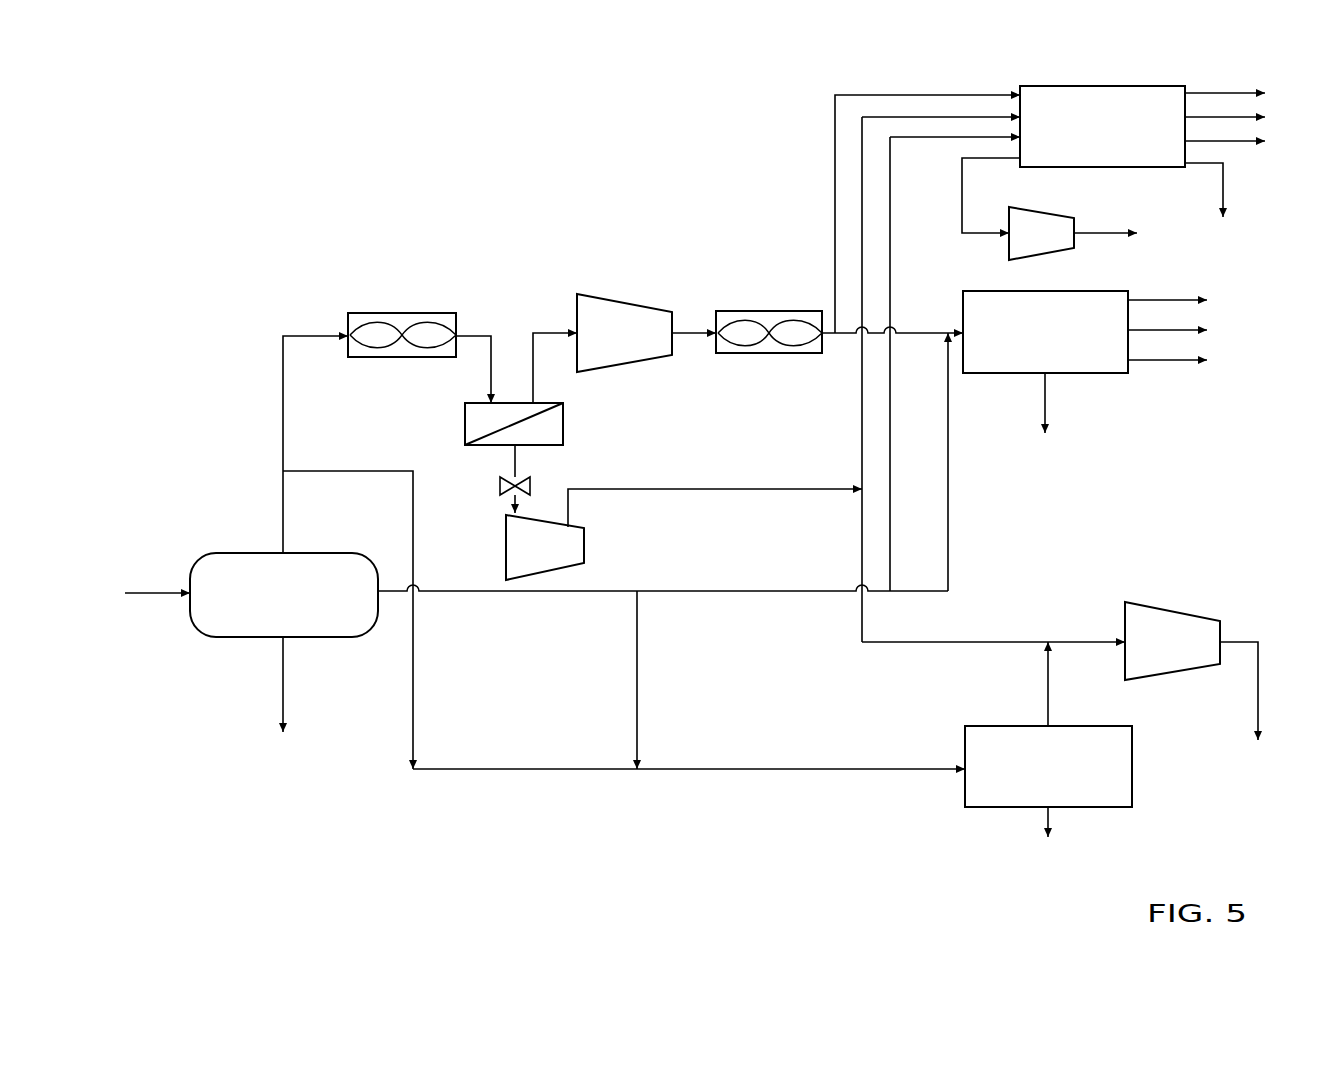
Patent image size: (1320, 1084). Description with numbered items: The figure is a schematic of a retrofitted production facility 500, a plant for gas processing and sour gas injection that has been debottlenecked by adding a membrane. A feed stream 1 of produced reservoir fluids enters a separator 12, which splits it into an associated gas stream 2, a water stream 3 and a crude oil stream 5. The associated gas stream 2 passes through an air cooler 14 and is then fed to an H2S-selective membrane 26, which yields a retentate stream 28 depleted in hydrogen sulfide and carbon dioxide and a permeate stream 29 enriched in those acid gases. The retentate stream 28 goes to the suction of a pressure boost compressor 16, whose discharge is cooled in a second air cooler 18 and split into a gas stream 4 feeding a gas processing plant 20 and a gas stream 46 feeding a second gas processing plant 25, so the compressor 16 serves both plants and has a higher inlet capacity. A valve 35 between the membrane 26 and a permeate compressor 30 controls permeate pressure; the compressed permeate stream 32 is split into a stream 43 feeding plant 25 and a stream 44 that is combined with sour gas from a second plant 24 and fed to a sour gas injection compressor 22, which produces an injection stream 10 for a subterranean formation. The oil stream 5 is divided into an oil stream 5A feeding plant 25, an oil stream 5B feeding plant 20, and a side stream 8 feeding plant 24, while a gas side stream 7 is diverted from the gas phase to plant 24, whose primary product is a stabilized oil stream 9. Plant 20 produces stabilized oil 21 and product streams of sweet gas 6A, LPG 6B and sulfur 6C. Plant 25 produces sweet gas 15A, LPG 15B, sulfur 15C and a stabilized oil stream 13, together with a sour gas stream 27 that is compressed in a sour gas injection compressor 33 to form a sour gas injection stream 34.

The retrofitted production facility 500 is at (334, 150).
The feed stream 1 is at (145, 593).
The associated gas stream 2 is at (283, 483).
The water stream 3 is at (282, 702).
The gas stream 4 is at (912, 333).
The crude oil stream 5 is at (720, 591).
The oil stream 5A is at (890, 462).
The oil stream 5B is at (948, 525).
The sweet gas product stream 6A is at (1186, 300).
The LPG product stream 6B is at (1186, 330).
The sulfur product stream 6C is at (1186, 360).
The side stream 7 is at (413, 530).
The side stream 8 is at (637, 678).
The stabilized oil stream 9 is at (1047, 840).
The sour gas injection stream 10 is at (1246, 709).
The separator 12 is at (271, 609).
The stabilized oil stream 13 is at (1211, 206).
The air cooler 14 is at (405, 313).
The sweet gas product stream 15A is at (1249, 93).
The LPG product stream 15B is at (1249, 117).
The sulfur product stream 15C is at (1249, 141).
The pressure boost compressor 16 is at (613, 345).
The second air cooler 18 is at (770, 311).
The gas processing plant 20 is at (1033, 345).
The stabilized oil 21 is at (1045, 420).
The sour gas injection compressor 22 is at (1158, 655).
The second plant 24 is at (1036, 779).
The gas processing plant 25 is at (1090, 139).
The H2S-selective membrane 26 is at (465, 420).
The sour gas stream 27 is at (962, 193).
The retentate stream 28 is at (533, 395).
The permeate stream 29 is at (515, 462).
The permeate compressor 30 is at (533, 559).
The compressed permeate stream 32 is at (758, 489).
The sour gas injection compressor 33 is at (1029, 247).
The sour gas injection stream 34 is at (1122, 233).
The valve 35 is at (500, 486).
The stream 43 is at (862, 215).
The stream 44 is at (1012, 642).
The gas stream 46 is at (835, 130).